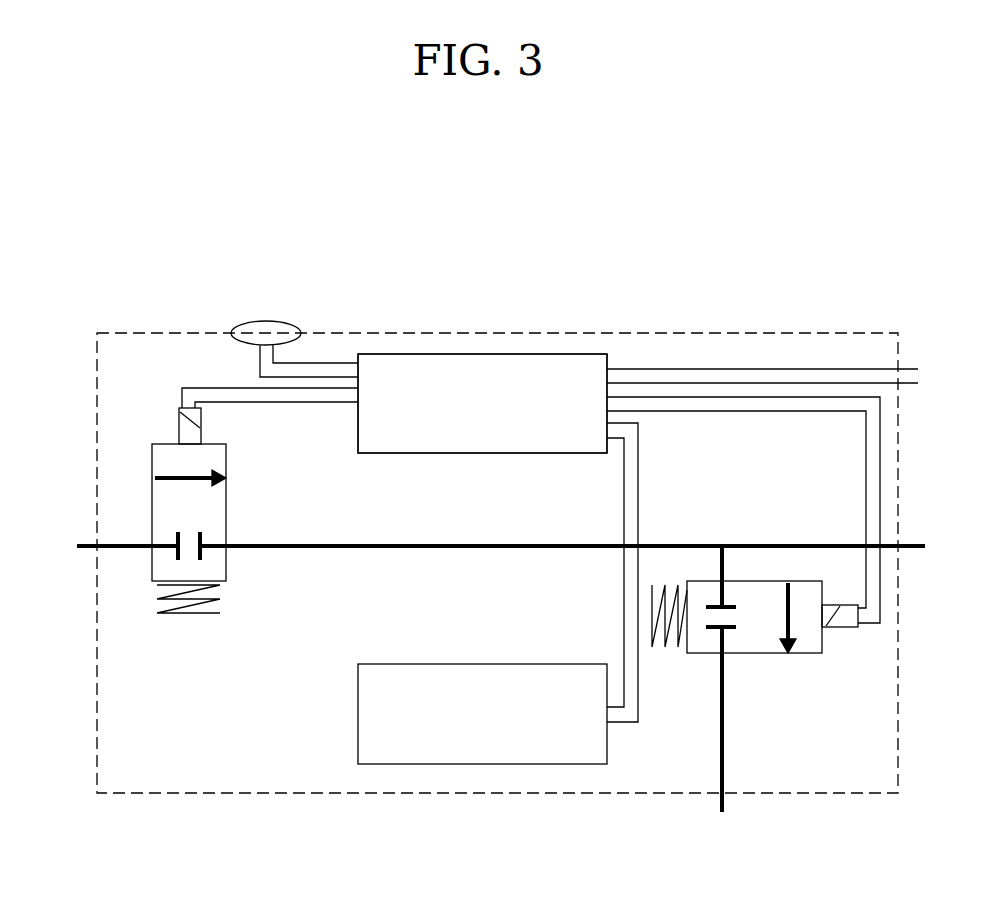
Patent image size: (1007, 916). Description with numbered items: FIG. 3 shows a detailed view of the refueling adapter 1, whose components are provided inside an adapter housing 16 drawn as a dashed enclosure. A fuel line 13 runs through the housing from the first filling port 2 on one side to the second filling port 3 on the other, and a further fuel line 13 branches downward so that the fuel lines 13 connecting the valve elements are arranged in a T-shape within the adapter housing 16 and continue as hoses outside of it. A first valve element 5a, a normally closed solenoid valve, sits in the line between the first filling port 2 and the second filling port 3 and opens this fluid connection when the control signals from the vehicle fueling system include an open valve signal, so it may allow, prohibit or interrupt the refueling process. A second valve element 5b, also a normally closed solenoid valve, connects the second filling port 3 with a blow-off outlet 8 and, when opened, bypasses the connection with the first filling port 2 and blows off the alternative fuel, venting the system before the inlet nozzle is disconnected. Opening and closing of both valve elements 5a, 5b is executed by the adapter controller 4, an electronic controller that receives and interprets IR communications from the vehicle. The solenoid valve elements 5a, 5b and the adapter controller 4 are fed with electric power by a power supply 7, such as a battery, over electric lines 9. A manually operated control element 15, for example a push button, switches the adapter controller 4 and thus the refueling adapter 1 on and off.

The refueling adapter 1 is at (238, 292).
The first filling port 2 is at (917, 534).
The second filling port 3 is at (97, 478).
The adapter controller 4 is at (455, 353).
The first valve element 5a is at (152, 565).
The second valve element 5b is at (690, 655).
The power supply 7 is at (427, 765).
The blow-off outlet 8 is at (720, 823).
The electric line 9 is at (707, 368).
The fuel line 13 is at (910, 552).
The control element 15 is at (276, 321).
The adapter housing 16 is at (530, 332).